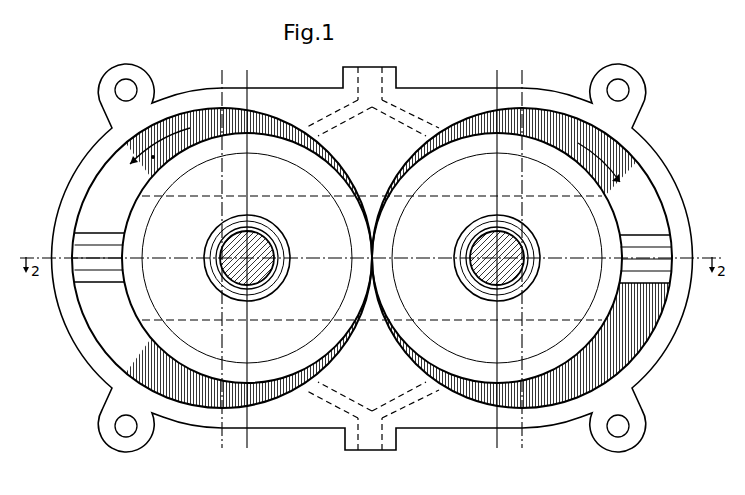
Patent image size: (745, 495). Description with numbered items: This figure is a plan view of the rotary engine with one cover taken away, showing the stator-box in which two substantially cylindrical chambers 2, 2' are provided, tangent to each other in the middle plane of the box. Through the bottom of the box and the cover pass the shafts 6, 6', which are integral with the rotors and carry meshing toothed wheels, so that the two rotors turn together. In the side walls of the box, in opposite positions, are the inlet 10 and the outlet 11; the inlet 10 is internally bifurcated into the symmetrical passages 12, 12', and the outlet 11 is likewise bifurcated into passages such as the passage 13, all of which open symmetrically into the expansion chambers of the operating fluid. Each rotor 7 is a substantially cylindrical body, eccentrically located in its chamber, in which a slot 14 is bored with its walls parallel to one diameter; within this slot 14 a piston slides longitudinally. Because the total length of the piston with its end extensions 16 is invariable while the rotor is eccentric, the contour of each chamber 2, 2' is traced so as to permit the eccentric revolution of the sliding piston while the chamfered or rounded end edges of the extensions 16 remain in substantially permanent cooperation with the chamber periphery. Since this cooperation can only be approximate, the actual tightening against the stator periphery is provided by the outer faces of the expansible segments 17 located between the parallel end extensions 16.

The cylindrical chamber 2 is at (212, 258).
The cylindrical chamber 2' is at (537, 258).
The shaft 6 is at (260, 258).
The shaft 6' is at (510, 258).
The rotor 7 is at (155, 225).
The inlet 10 is at (365, 79).
The outlet 11 is at (366, 443).
The passage 12 is at (333, 101).
The passage 12' is at (411, 101).
The passage 13 is at (343, 403).
The slot 14 is at (160, 197).
The end extension 16 is at (95, 237).
The expansible segment 17 is at (83, 248).